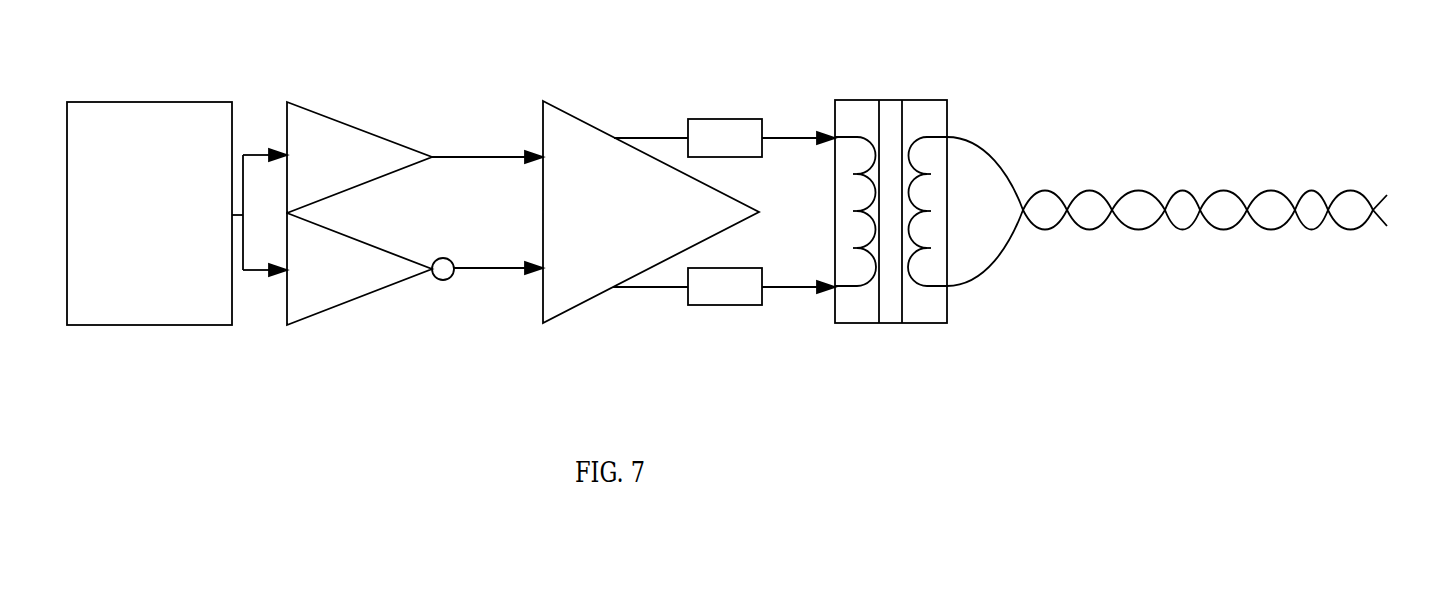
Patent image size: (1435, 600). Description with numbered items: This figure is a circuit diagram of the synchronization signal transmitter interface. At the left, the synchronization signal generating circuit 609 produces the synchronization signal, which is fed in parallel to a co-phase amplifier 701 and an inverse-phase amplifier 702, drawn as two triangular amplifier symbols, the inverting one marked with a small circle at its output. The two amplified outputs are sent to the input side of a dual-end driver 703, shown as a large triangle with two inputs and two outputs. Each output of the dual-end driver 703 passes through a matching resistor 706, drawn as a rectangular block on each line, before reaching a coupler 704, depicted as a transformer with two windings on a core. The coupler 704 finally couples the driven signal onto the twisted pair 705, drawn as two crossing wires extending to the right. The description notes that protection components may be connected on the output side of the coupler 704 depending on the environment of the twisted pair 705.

The synchronization signal generating circuit 609 is at (125, 102).
The co-phase amplifier 701 is at (360, 123).
The inverse-phase amplifier 702 is at (367, 295).
The dual-end driver 703 is at (580, 123).
The matching resistor 706 is at (728, 119).
The coupler 704 is at (908, 100).
The twisted pair 705 is at (1183, 197).